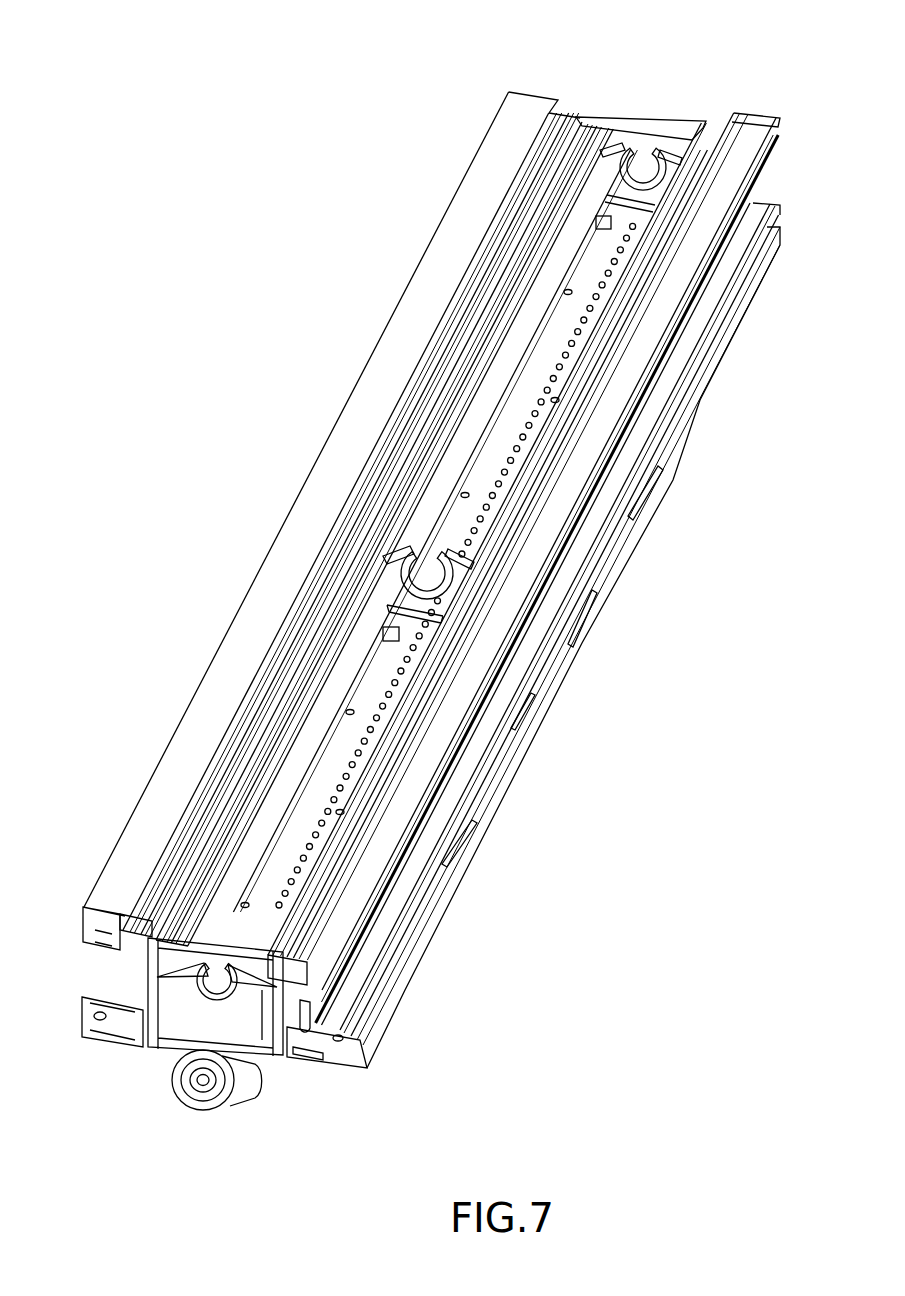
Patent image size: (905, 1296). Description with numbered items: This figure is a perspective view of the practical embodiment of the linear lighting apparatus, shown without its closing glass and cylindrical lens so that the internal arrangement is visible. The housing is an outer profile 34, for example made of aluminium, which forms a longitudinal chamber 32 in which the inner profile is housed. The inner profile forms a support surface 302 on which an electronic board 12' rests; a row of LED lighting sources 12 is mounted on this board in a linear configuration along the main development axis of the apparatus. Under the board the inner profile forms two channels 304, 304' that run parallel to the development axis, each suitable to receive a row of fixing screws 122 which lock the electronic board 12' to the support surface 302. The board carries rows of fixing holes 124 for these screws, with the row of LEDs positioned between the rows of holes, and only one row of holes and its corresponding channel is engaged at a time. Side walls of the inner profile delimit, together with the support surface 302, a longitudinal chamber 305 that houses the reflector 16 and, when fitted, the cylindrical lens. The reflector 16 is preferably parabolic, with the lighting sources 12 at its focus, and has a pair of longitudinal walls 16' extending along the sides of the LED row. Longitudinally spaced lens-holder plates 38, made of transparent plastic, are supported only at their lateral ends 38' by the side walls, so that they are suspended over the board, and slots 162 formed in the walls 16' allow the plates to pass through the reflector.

The lighting sources 12 is at (431, 590).
The electronic board 12' is at (378, 525).
The reflector 16 is at (378, 537).
The longitudinal walls 16' is at (431, 531).
The longitudinal chamber 32 is at (642, 165).
The outer profile 34 is at (115, 892).
The lens-holder plate 38 is at (585, 589).
The lateral ends 38' is at (141, 969).
The fixing screws 122 is at (348, 812).
The fixing holes 124 is at (568, 290).
The slots 162 is at (400, 560).
The support surface 302 is at (173, 1007).
The channel 304 is at (178, 1113).
The channel 304' is at (243, 1127).
The longitudinal chamber 305 is at (263, 1012).